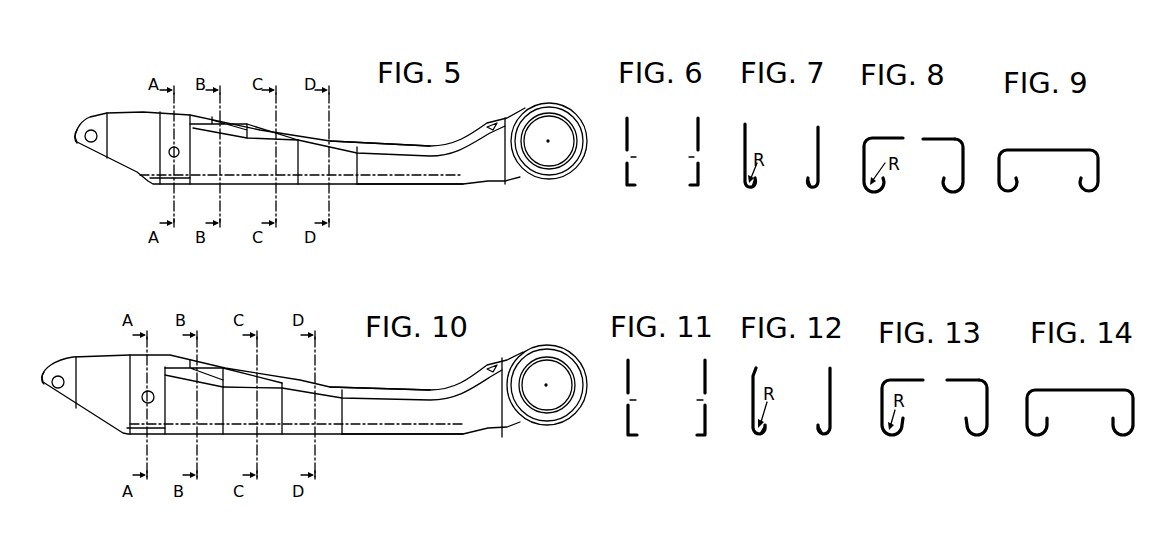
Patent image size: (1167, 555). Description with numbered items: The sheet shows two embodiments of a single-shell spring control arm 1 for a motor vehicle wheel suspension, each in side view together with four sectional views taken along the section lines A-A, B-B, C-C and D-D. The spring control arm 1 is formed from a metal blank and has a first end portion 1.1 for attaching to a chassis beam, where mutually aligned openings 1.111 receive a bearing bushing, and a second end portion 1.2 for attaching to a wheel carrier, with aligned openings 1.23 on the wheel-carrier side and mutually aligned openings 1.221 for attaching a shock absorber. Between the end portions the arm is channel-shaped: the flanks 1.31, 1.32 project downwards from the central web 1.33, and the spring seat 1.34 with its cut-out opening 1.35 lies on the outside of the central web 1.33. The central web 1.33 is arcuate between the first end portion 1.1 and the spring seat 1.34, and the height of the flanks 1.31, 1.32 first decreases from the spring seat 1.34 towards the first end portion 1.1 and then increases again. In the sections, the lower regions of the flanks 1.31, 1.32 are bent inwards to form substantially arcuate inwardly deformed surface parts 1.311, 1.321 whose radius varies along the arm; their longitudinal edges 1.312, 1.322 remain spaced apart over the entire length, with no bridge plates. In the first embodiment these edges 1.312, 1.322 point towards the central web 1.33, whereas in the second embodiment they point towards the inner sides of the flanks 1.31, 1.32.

In FIG. 5, the spring control arm 1 is at (437, 199).
In FIG. 10, the spring control arm 1 is at (517, 345).
In FIG. 5, the first end portion 1.1 is at (582, 153).
In FIG. 10, the first end portion 1.1 is at (580, 403).
In FIG. 5, the openings 1.111 is at (540, 155).
In FIG. 10, the openings 1.111 is at (542, 403).
In FIG. 5, the second end portion 1.2 is at (78, 143).
In FIG. 10, the second end portion 1.2 is at (52, 390).
In FIG. 5, the aligned openings 1.23 is at (88, 128).
In FIG. 10, the aligned openings 1.23 is at (59, 376).
In FIG. 5, the openings 1.221 is at (168, 156).
In FIG. 6, the openings 1.221 is at (690, 157).
In FIG. 10, the openings 1.221 is at (143, 399).
In FIG. 11, the openings 1.221 is at (705, 400).
In FIG. 6, the flank 1.31 is at (623, 138).
In FIG. 7, the flank 1.31 is at (741, 148).
In FIG. 9, the flank 1.31 is at (999, 172).
In FIG. 11, the flank 1.31 is at (627, 380).
In FIG. 12, the flank 1.31 is at (753, 395).
In FIG. 13, the flank 1.31 is at (882, 410).
In FIG. 14, the flank 1.31 is at (1023, 410).
In FIG. 7, the inwardly deformed surface part 1.311 is at (748, 190).
In FIG. 9, the inwardly deformed surface part 1.311 is at (1013, 190).
In FIG. 12, the inwardly deformed surface part 1.311 is at (753, 433).
In FIG. 14, the inwardly deformed surface part 1.311 is at (1038, 437).
In FIG. 8, the longitudinal edge 1.312 is at (890, 183).
In FIG. 13, the longitudinal edge 1.312 is at (907, 415).
In FIG. 5, the flank 1.32 is at (363, 167).
In FIG. 6, the flank 1.32 is at (702, 137).
In FIG. 7, the flank 1.32 is at (823, 163).
In FIG. 8, the flank 1.32 is at (963, 160).
In FIG. 9, the flank 1.32 is at (1100, 163).
In FIG. 10, the flank 1.32 is at (357, 413).
In FIG. 11, the flank 1.32 is at (707, 380).
In FIG. 12, the flank 1.32 is at (830, 395).
In FIG. 13, the flank 1.32 is at (990, 400).
In FIG. 14, the flank 1.32 is at (1133, 407).
In FIG. 7, the inwardly deformed surface part 1.321 is at (808, 190).
In FIG. 9, the inwardly deformed surface part 1.321 is at (1087, 190).
In FIG. 12, the inwardly deformed surface part 1.321 is at (823, 437).
In FIG. 14, the inwardly deformed surface part 1.321 is at (1113, 435).
In FIG. 8, the longitudinal edge 1.322 is at (938, 181).
In FIG. 13, the longitudinal edge 1.322 is at (963, 418).
In FIG. 5, the central web 1.33 is at (338, 142).
In FIG. 9, the central web 1.33 is at (1050, 150).
In FIG. 10, the central web 1.33 is at (332, 387).
In FIG. 14, the central web 1.33 is at (1087, 390).
In FIG. 5, the spring seat 1.34 is at (270, 128).
In FIG. 8, the spring seat 1.34 is at (938, 138).
In FIG. 10, the spring seat 1.34 is at (263, 377).
In FIG. 13, the spring seat 1.34 is at (967, 380).
In FIG. 8, the opening 1.35 is at (910, 138).
In FIG. 13, the opening 1.35 is at (932, 378).